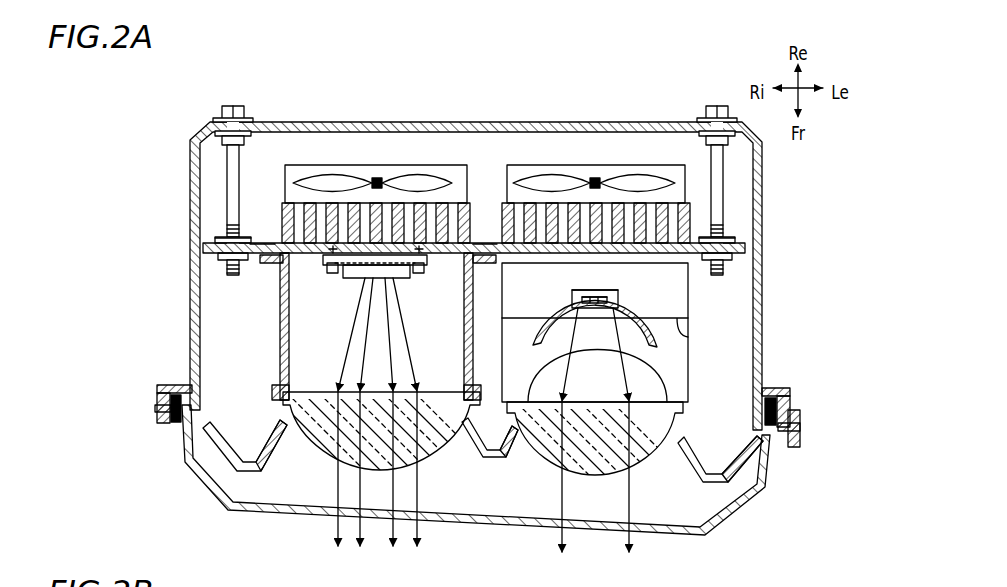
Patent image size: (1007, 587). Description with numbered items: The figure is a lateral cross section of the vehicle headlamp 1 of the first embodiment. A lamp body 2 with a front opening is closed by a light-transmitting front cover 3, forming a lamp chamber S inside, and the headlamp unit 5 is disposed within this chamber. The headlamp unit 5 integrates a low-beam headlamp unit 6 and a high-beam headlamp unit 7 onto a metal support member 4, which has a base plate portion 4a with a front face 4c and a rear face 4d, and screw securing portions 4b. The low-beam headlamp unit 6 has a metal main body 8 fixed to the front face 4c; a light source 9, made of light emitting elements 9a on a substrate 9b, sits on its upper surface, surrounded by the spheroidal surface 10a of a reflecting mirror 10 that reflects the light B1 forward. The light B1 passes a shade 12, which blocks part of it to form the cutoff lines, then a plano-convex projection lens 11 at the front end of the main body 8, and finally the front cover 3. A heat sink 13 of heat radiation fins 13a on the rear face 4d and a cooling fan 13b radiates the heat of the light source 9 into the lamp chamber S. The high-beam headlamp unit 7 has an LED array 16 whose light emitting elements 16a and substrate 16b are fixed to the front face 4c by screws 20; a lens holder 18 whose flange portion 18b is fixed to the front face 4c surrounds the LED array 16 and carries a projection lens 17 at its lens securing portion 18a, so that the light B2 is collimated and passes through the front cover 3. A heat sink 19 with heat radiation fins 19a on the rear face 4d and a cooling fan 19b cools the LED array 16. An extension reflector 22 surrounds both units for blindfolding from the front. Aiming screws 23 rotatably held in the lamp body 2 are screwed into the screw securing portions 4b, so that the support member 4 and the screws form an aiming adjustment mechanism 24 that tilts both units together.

The vehicle headlamp 1 is at (250, 63).
The lamp body 2 is at (658, 122).
The front cover 3 is at (772, 457).
The support member 4 is at (193, 227).
The base plate portion 4a is at (484, 242).
The screw securing portions 4b is at (215, 240).
The front face 4c is at (292, 258).
The rear face 4d is at (262, 242).
The headlamp unit 5 is at (455, 78).
The low-beam headlamp unit 6 is at (516, 162).
The high-beam headlamp unit 7 is at (453, 162).
The main body 8 is at (677, 303).
The light source 9 is at (818, 152).
The light emitting elements 9a is at (606, 290).
The substrate 9b is at (591, 290).
The reflecting mirror 10 is at (650, 288).
The spheroidal surface 10a is at (558, 302).
The projection lens 11 is at (536, 428).
The shade 12 is at (690, 337).
The heat sink 13 is at (555, 78).
The heat radiation fins 13a is at (528, 210).
The cooling fan 13b is at (632, 180).
The LED array 16 is at (280, 78).
The light emitting elements 16a is at (336, 222).
The substrate 16b is at (352, 232).
The projection lens 17 is at (440, 424).
The lens holder 18 is at (281, 326).
The lens securing portion 18a is at (272, 389).
The flange portion 18b is at (266, 262).
The heat sink 19 is at (445, 78).
The heat radiation fins 19a is at (379, 198).
The cooling fan 19b is at (420, 182).
The screws 20 is at (333, 273).
The extension reflector 22 is at (228, 455).
The aiming screws 23 is at (232, 106).
The aiming adjustment mechanism 24 is at (245, 78).
The lamp chamber S is at (236, 411).
The light B1 is at (640, 557).
The light B2 is at (425, 552).